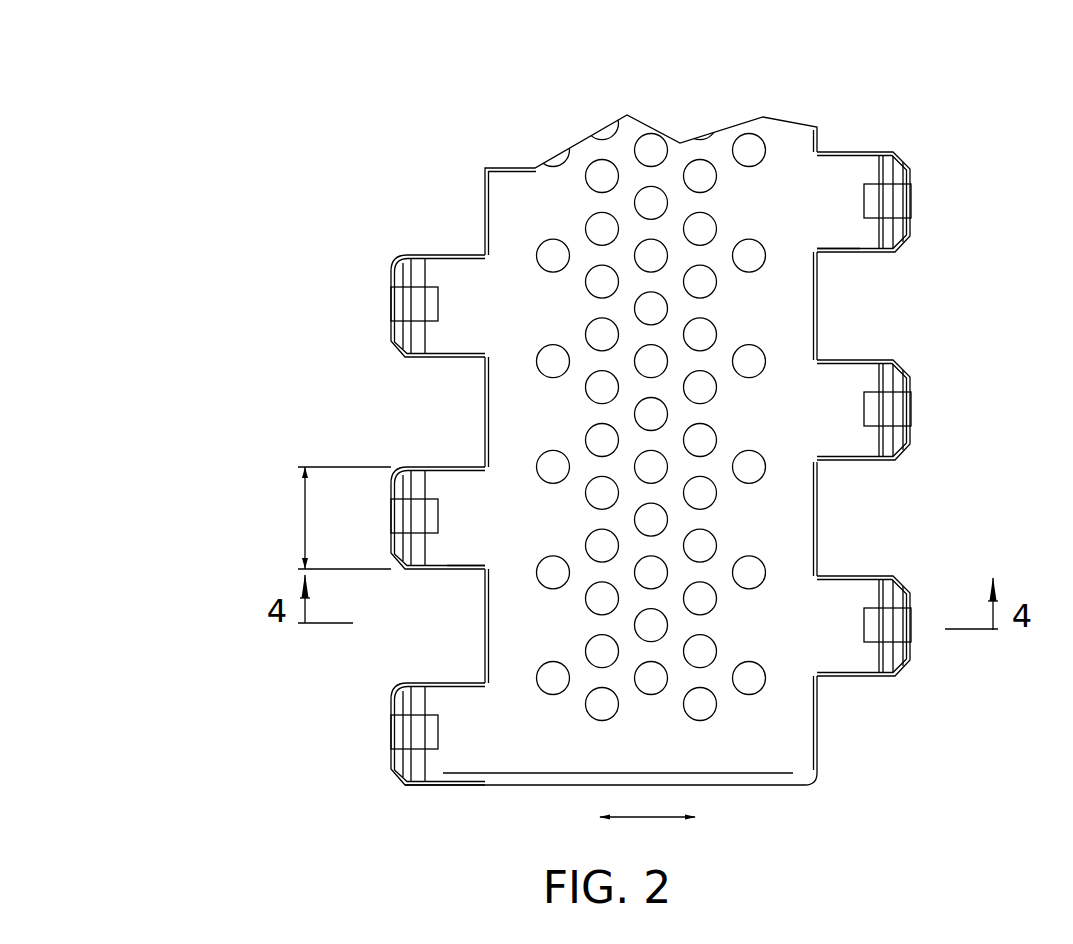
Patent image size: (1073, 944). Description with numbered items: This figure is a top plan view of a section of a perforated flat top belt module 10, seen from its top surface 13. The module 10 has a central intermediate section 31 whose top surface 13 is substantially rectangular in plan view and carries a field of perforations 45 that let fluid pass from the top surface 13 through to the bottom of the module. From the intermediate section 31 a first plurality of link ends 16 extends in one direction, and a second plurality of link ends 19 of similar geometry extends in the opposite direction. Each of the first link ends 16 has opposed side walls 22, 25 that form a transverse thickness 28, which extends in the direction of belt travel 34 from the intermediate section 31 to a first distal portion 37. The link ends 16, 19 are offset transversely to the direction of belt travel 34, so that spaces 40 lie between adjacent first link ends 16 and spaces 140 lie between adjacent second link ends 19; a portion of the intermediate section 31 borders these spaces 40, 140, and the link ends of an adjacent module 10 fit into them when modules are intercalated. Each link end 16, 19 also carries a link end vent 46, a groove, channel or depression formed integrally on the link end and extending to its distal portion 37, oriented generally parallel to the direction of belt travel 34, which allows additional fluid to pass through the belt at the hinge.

The belt module 10 is at (390, 177).
The top surface 13 is at (778, 727).
The first plurality of link ends 16 is at (452, 292).
The second plurality of link ends 19 is at (897, 378).
The side wall 22 is at (447, 467).
The side wall 25 is at (447, 573).
The transverse thickness 28 is at (303, 513).
The intermediate section 31 is at (774, 634).
The direction of belt travel 34 is at (647, 817).
The first distal portion 37 is at (390, 296).
The spaces 40 is at (437, 422).
The perforations 45 is at (550, 683).
The link end vents 46 is at (402, 523).
The spaces 140 is at (856, 526).